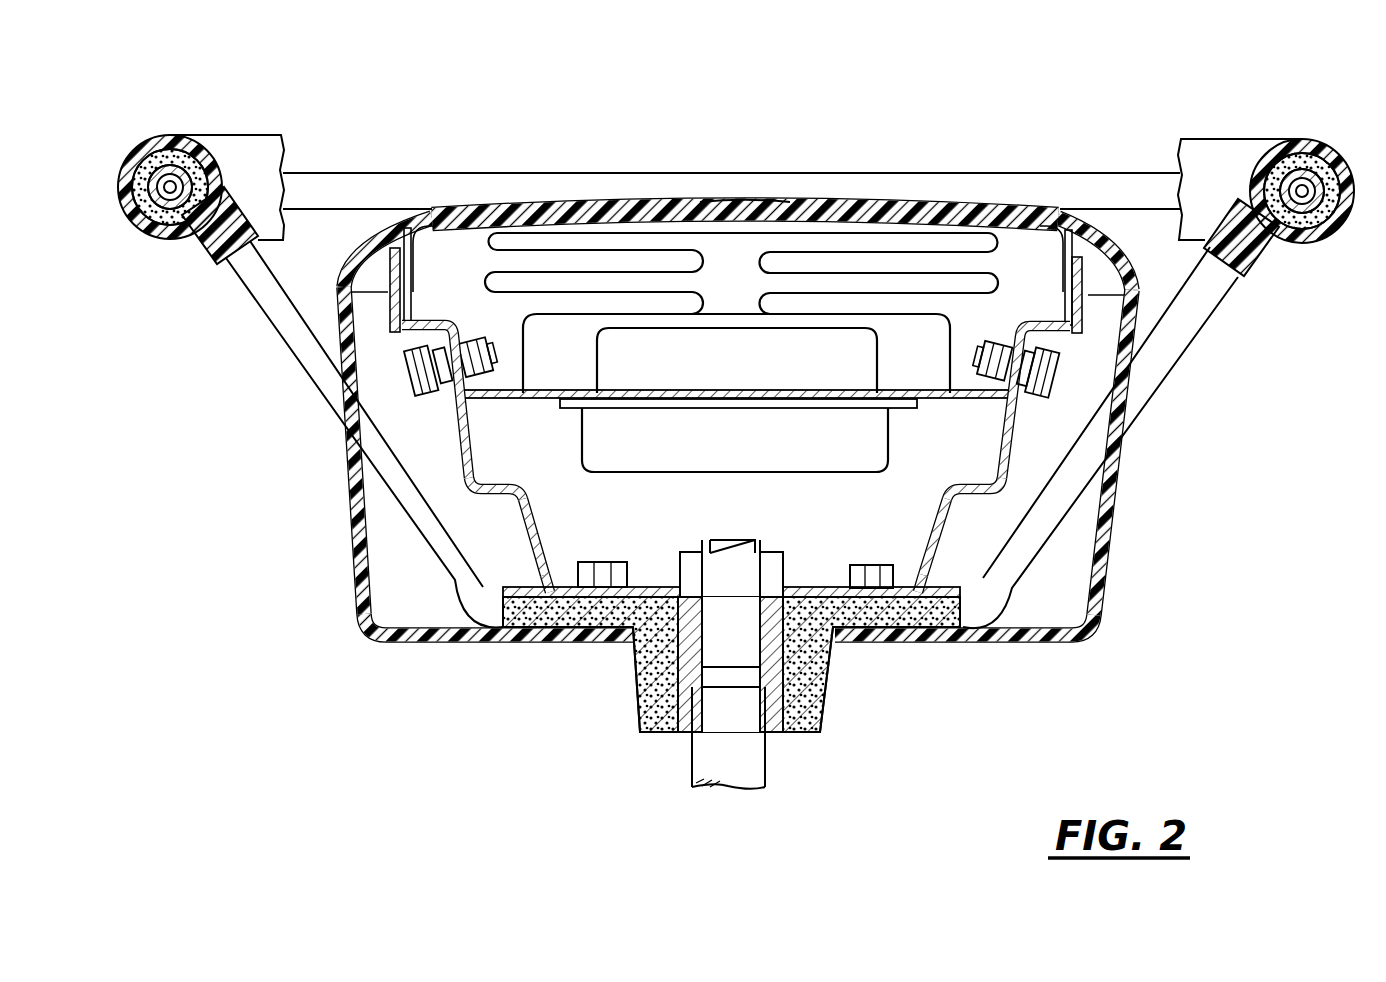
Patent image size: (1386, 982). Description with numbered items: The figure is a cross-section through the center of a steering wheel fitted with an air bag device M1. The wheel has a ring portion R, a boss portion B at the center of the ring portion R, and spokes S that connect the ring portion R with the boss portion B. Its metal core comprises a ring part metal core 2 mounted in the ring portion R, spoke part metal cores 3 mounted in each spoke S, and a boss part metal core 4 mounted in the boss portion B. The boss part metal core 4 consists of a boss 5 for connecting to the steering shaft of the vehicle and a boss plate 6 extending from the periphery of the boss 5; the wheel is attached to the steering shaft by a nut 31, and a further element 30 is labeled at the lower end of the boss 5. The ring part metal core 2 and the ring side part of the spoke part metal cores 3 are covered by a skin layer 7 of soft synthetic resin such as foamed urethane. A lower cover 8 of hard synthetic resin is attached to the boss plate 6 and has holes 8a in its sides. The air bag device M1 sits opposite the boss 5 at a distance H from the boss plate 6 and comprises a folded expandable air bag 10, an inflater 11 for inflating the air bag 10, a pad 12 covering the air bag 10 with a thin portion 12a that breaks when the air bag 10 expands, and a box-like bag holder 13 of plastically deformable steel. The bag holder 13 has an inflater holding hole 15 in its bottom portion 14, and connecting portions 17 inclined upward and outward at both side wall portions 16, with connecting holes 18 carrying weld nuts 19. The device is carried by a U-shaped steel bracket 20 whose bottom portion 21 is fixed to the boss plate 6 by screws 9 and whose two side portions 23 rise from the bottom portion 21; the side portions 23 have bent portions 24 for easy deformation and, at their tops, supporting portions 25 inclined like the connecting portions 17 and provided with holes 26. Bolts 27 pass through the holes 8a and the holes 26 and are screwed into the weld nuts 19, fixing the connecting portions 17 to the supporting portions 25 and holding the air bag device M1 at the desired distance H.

The ring part metal core 2 is at (171, 180).
The spoke part metal core 3 is at (228, 250).
The boss part metal core 4 is at (620, 696).
The boss 5 is at (768, 717).
The boss plate 6 is at (875, 615).
The skin layer 7 is at (1349, 186).
The lower cover 8 is at (358, 603).
The holes 8a is at (350, 392).
The screws 9 is at (602, 573).
The air bag 10 is at (642, 231).
The inflater 11 is at (748, 448).
The pad 12 is at (868, 208).
The thin portion 12a is at (737, 198).
The bag holder 13 is at (944, 413).
The bottom portion 14 is at (985, 400).
The inflater holding hole 15 is at (622, 386).
The side wall portions 16 is at (400, 250).
The connecting portions 17 is at (455, 330).
The connecting holes 18 is at (488, 362).
The weld nuts 19 is at (488, 392).
The bracket 20 is at (490, 548).
The bottom portion 21 is at (597, 597).
The side portions 23 is at (530, 597).
The bent portions 24 is at (455, 500).
The supporting portions 25 is at (458, 418).
The holes 26 is at (410, 348).
The bolts 27 is at (425, 388).
The threaded rod 30 is at (745, 775).
The nut 31 is at (692, 567).
The ring portion R is at (1215, 157).
The spokes S is at (1273, 265).
The distance H is at (834, 517).
The air bag device M1 is at (566, 437).
The boss portion B is at (813, 810).